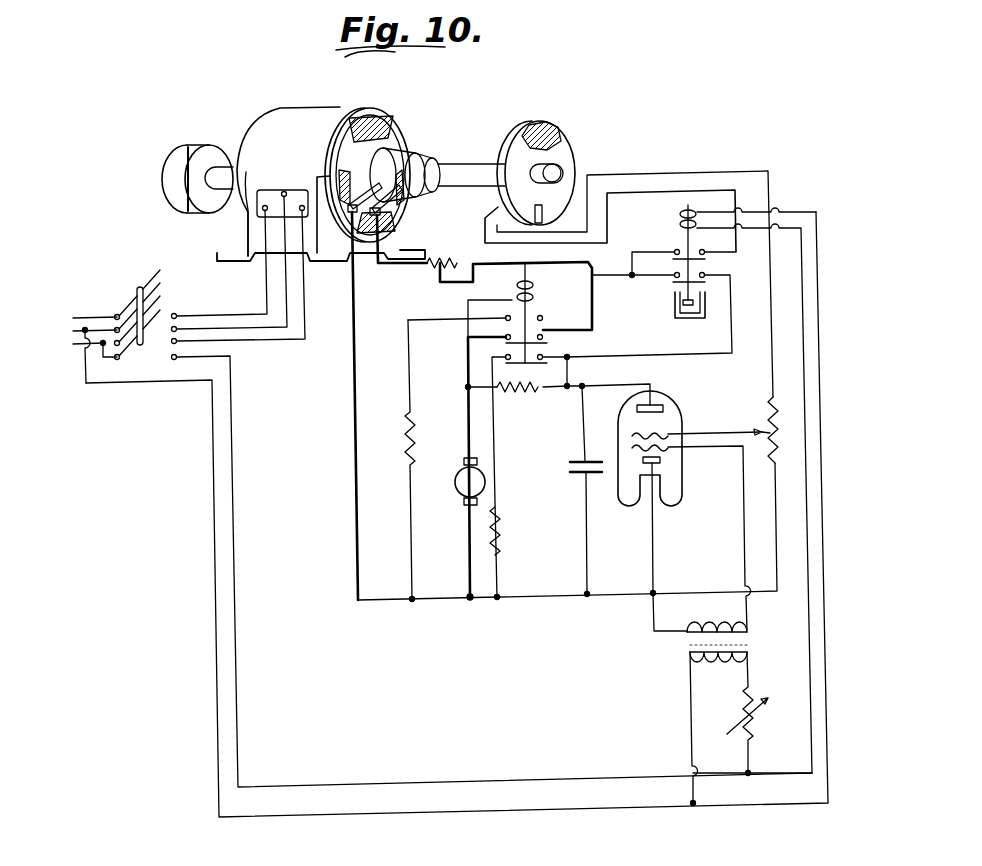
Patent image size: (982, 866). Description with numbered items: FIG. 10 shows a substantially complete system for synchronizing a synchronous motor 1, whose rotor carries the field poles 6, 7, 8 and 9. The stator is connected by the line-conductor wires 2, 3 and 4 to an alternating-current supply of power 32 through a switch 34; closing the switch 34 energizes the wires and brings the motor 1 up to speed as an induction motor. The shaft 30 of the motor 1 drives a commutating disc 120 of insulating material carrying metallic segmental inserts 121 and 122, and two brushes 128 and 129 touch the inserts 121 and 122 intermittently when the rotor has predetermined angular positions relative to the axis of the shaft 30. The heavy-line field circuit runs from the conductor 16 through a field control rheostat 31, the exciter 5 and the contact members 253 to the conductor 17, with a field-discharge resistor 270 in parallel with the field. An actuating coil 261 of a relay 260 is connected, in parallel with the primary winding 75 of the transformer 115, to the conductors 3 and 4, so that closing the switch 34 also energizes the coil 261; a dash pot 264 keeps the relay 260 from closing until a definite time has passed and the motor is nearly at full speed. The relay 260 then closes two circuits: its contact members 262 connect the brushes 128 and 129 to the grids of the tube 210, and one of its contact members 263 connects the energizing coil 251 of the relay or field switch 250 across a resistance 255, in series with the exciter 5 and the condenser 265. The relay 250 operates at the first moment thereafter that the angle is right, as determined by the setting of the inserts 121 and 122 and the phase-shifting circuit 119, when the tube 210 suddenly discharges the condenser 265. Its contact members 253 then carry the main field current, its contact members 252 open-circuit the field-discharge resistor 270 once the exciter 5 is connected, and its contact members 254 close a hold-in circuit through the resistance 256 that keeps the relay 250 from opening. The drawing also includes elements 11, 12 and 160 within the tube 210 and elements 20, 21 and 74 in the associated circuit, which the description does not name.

The synchronous motor 1 is at (286, 118).
The line-conductor wire 2 is at (196, 312).
The line-conductor wire 3 is at (218, 326).
The line-conductor wire 4 is at (253, 338).
The exciter 5 is at (455, 476).
The field pole 6 is at (398, 133).
The field pole 7 is at (399, 213).
The field pole 8 is at (347, 206).
The field pole 9 is at (353, 138).
The filament 11 is at (666, 457).
The grid 12 is at (666, 434).
The conductor 16 is at (352, 292).
The conductor 17 is at (377, 264).
The potentiometer resistor 20 is at (770, 402).
The potentiometer tap 21 is at (777, 457).
The shaft 30 is at (470, 163).
The field control rheostat 31 is at (436, 260).
The alternating-current supply of power 32 is at (70, 330).
The switch 34 is at (137, 284).
The transformer primary coil 74 is at (712, 618).
The primary winding 75 is at (724, 667).
The transformer 115 is at (737, 641).
The phase-shifting circuit 119 is at (755, 721).
The commutating disc 120 is at (561, 152).
The segmental insert 121 is at (547, 123).
The segmental insert 122 is at (543, 207).
The brush 128 is at (485, 218).
The brush 129 is at (635, 284).
The cathode 160 is at (642, 460).
The tube 210 is at (668, 396).
The relay or field switch 250 is at (516, 310).
The energizing coil 251 is at (516, 282).
The contact members 252 is at (545, 317).
The contact members 253 is at (543, 338).
The contact members 254 is at (545, 356).
The resistance 255 is at (517, 396).
The resistance 256 is at (503, 523).
The relay 260 is at (683, 240).
The actuating coil 261 is at (682, 211).
The contact members 262 is at (706, 254).
The contact members 263 is at (706, 277).
The dash pot 264 is at (692, 316).
The condenser 265 is at (580, 462).
The field-discharge resistor 270 is at (407, 426).